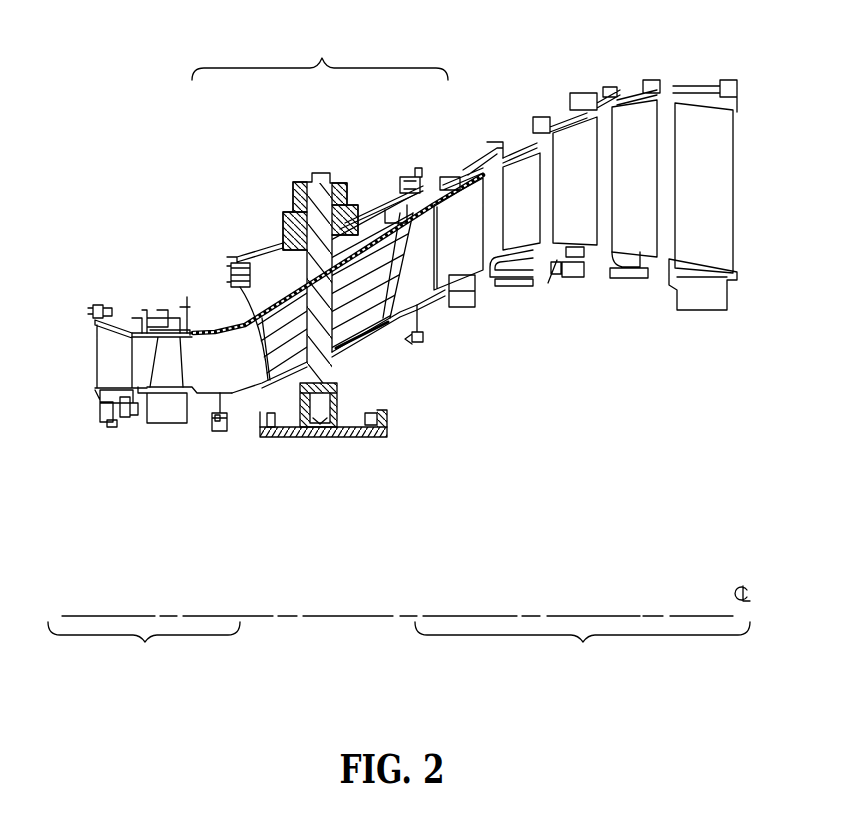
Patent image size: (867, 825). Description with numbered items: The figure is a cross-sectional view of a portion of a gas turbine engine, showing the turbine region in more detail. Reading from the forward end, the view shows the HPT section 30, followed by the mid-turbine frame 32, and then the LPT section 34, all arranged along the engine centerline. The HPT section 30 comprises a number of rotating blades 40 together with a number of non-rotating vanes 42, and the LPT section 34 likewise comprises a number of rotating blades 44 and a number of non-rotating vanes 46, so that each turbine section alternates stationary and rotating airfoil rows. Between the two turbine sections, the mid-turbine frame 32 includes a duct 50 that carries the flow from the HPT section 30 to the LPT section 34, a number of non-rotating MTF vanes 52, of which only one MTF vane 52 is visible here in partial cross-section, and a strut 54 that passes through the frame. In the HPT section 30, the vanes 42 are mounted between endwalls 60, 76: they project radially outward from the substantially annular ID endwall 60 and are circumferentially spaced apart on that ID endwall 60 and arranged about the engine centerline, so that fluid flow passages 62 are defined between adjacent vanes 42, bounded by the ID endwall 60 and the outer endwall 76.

The HPT section 30 is at (144, 647).
The mid-turbine frame 32 is at (320, 57).
The LPT section 34 is at (582, 645).
The rotating blades 40 is at (157, 380).
The non-rotating vanes 42 is at (128, 373).
The rotating blades 44 is at (453, 242).
The non-rotating vanes 46 is at (510, 213).
The duct 50 is at (244, 340).
The MTF vane 52 is at (350, 331).
The strut 54 is at (313, 238).
The ID endwall 60 is at (95, 406).
The fluid flow passages 62 is at (412, 250).
The endwall 76 is at (122, 332).